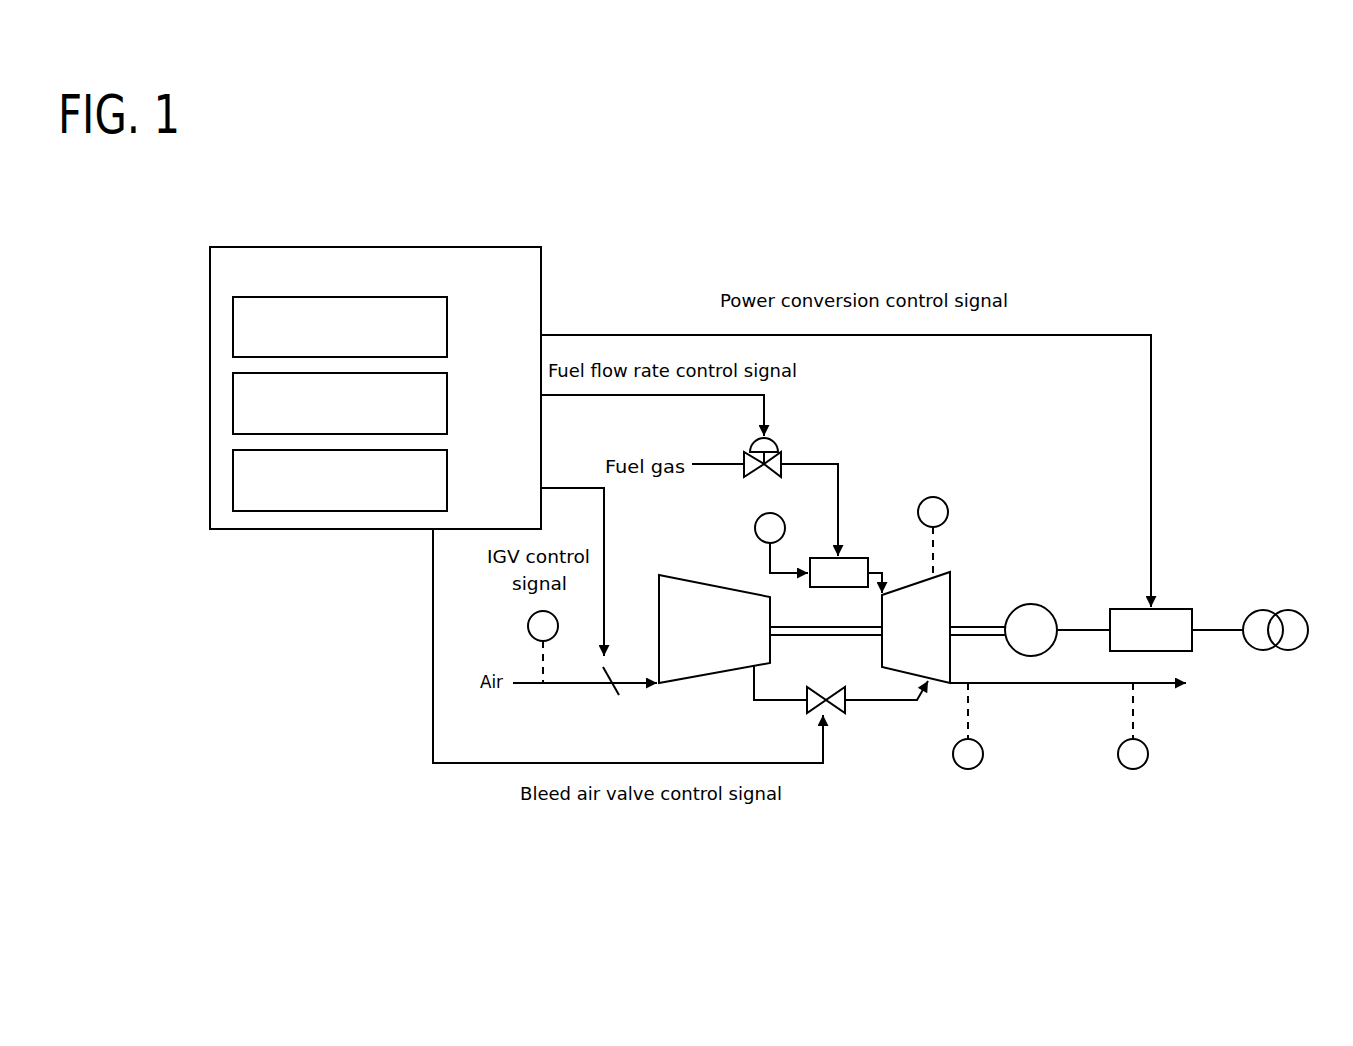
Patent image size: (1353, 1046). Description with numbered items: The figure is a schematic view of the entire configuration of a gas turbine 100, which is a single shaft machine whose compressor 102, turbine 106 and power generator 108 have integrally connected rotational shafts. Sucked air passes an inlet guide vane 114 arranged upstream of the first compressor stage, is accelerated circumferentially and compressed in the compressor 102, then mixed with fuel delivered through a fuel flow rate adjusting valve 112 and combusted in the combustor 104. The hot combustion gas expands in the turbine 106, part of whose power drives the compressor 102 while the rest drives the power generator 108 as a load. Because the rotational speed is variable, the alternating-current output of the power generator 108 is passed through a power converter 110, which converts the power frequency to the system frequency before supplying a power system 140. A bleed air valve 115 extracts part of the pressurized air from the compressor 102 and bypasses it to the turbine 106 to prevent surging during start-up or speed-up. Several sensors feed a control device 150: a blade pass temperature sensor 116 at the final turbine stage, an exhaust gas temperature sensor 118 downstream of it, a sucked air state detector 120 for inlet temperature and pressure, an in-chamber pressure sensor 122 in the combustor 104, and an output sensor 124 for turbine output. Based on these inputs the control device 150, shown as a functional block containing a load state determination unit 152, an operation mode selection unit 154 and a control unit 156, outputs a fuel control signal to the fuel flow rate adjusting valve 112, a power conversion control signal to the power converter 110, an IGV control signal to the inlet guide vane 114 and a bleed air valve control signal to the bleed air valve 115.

The gas turbine 100 is at (858, 740).
The compressor 102 is at (692, 681).
The combustor 104 is at (866, 556).
The turbine 106 is at (950, 572).
The power generator 108 is at (1047, 606).
The power converter 110 is at (1180, 609).
The fuel flow rate adjusting valve 112 is at (773, 440).
The inlet guide vane 114 is at (617, 697).
The bleed air valve 115 is at (820, 688).
The blade pass temperature sensor 116 is at (968, 769).
The exhaust gas temperature sensor 118 is at (1133, 769).
The sucked air state detector 120 is at (528, 627).
The in-chamber pressure sensor 122 is at (753, 526).
The output sensor 124 is at (932, 497).
The power system 140 is at (1292, 612).
The control device 150 is at (380, 247).
The load state determination unit 152 is at (447, 327).
The operation mode selection unit 154 is at (447, 404).
The control unit 156 is at (447, 480).